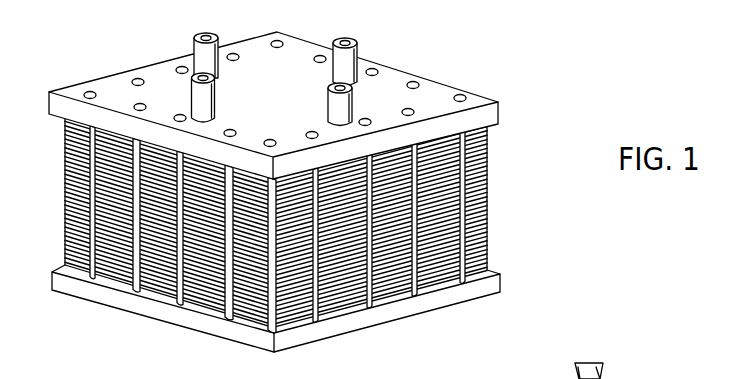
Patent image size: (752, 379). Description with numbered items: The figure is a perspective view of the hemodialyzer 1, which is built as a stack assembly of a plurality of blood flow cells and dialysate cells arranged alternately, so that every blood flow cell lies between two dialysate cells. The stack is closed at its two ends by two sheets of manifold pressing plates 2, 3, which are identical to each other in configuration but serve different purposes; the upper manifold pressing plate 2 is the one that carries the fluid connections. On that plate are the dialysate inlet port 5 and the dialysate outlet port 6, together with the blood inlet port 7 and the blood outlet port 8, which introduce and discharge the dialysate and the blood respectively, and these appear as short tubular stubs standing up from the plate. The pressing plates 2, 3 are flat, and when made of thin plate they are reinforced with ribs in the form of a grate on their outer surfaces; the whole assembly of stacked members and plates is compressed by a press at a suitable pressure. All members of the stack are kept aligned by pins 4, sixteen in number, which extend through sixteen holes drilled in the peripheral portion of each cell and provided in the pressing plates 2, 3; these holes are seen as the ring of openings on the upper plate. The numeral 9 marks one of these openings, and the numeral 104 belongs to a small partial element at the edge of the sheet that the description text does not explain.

The hemodialyzer 1 is at (487, 224).
The manifold pressing plate 2 is at (493, 110).
The manifold pressing plate 3 is at (500, 280).
The pins 4 is at (460, 190).
The dialysate inlet port 5 is at (195, 48).
The dialysate outlet port 6 is at (353, 100).
The blood inlet port 7 is at (192, 88).
The blood outlet port 8 is at (358, 53).
The bolt holes 9 is at (280, 43).
The partial element of adjacent figure 104 is at (605, 377).